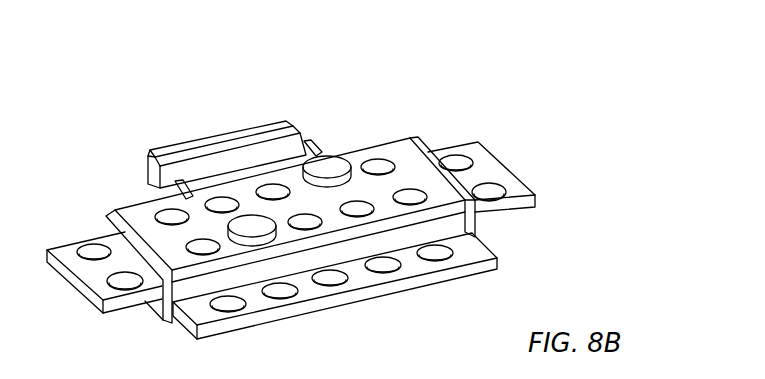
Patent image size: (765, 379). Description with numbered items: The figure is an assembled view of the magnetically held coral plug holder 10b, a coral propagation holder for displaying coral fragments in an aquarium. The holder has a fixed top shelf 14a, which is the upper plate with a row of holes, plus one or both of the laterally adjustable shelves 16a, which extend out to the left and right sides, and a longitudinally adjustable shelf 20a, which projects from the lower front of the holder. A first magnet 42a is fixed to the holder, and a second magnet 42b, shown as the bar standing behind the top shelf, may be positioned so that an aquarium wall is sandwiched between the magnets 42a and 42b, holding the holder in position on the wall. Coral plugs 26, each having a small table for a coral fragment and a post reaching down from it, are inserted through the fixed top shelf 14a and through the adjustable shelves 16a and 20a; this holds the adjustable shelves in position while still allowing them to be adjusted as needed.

The connector assembly 10b is at (177, 102).
The fixed top shelf 14a is at (389, 153).
The laterally adjustable shelves 16a is at (65, 250).
The longitudinally adjustable shelf 20a is at (365, 282).
The coral plug 26 is at (316, 176).
The first magnet 42a is at (309, 151).
The second magnet 42b is at (268, 133).